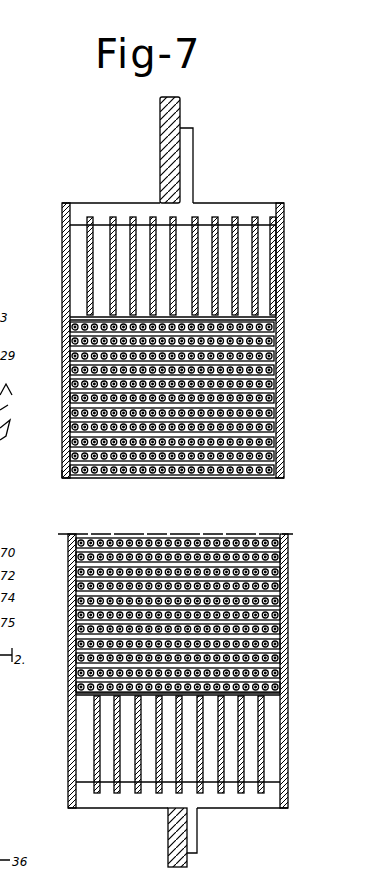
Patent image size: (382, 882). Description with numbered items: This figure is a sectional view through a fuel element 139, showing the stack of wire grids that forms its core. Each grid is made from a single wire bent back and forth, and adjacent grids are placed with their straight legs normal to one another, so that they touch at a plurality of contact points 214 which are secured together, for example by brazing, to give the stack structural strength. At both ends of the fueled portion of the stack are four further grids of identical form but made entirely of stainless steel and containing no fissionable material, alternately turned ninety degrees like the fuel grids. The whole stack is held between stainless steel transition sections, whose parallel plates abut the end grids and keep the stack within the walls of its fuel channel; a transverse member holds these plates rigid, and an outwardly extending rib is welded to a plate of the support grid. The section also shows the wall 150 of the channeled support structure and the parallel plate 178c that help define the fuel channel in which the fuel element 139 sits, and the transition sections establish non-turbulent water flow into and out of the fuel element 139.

The contact points 214 is at (284, 428).
The plate 178c is at (284, 478).
The wall 150 is at (62, 470).
The fuel element 139 is at (168, 304).